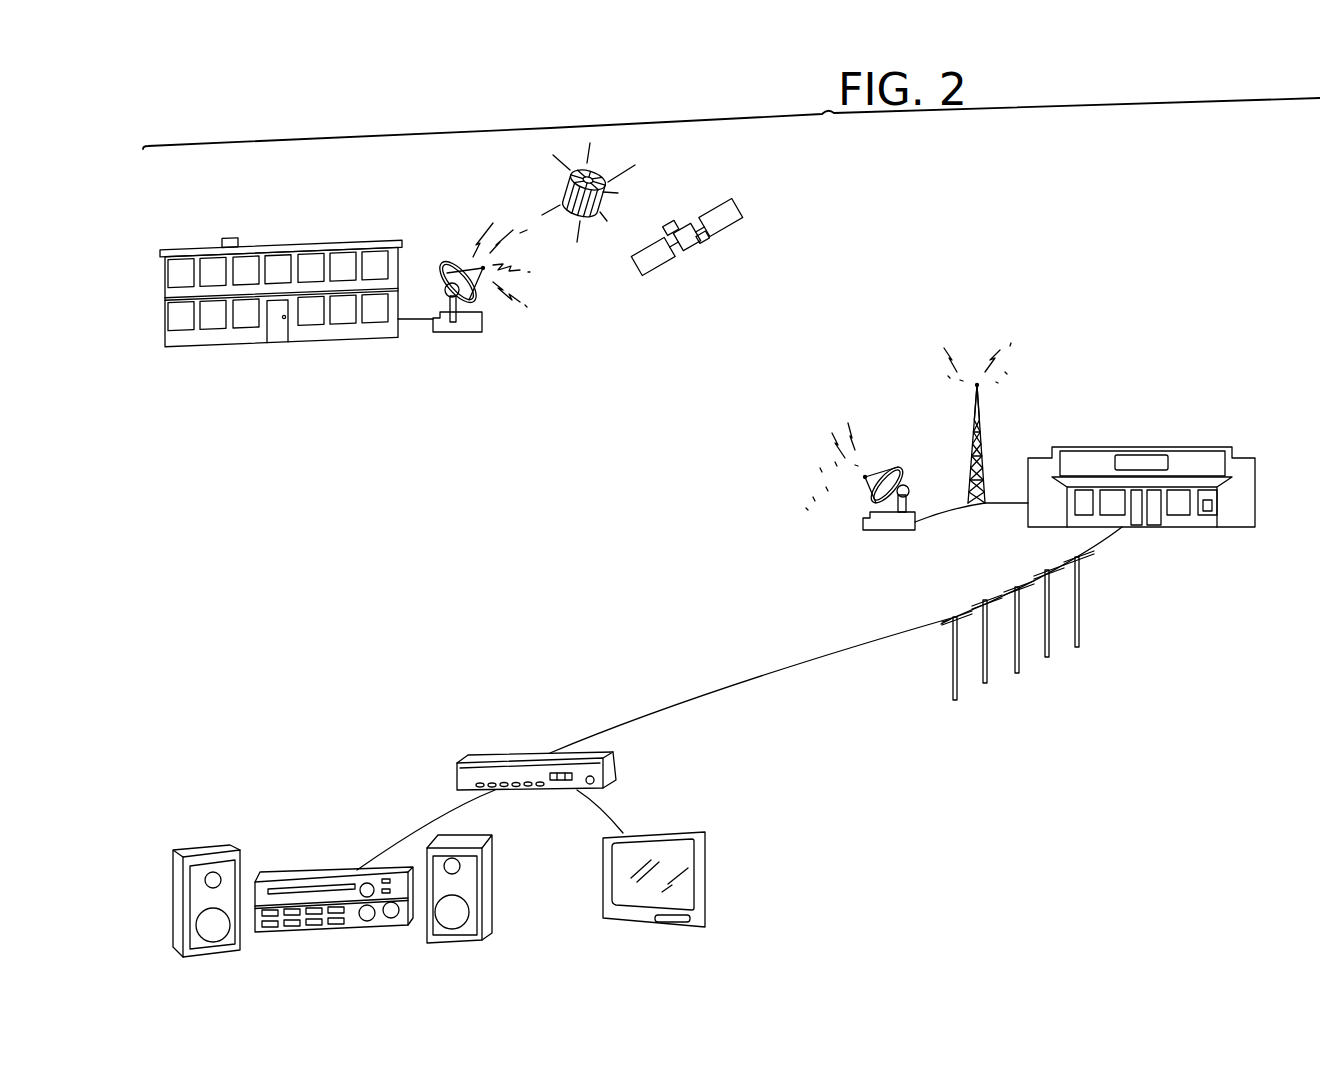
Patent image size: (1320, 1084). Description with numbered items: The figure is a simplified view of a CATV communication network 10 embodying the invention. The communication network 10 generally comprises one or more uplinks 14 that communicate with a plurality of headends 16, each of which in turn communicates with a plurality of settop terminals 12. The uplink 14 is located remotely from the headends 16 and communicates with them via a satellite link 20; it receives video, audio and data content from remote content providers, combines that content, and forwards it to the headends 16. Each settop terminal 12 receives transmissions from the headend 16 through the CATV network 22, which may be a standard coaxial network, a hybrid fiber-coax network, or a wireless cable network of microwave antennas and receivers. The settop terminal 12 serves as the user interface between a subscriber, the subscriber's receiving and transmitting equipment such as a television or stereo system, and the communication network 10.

The CATV communication network 10 is at (1112, 182).
The settop terminal 12 is at (483, 757).
The uplink 14 is at (187, 248).
The headend 16 is at (1196, 447).
The satellite link 20 is at (685, 212).
The CATV network 22 is at (916, 628).